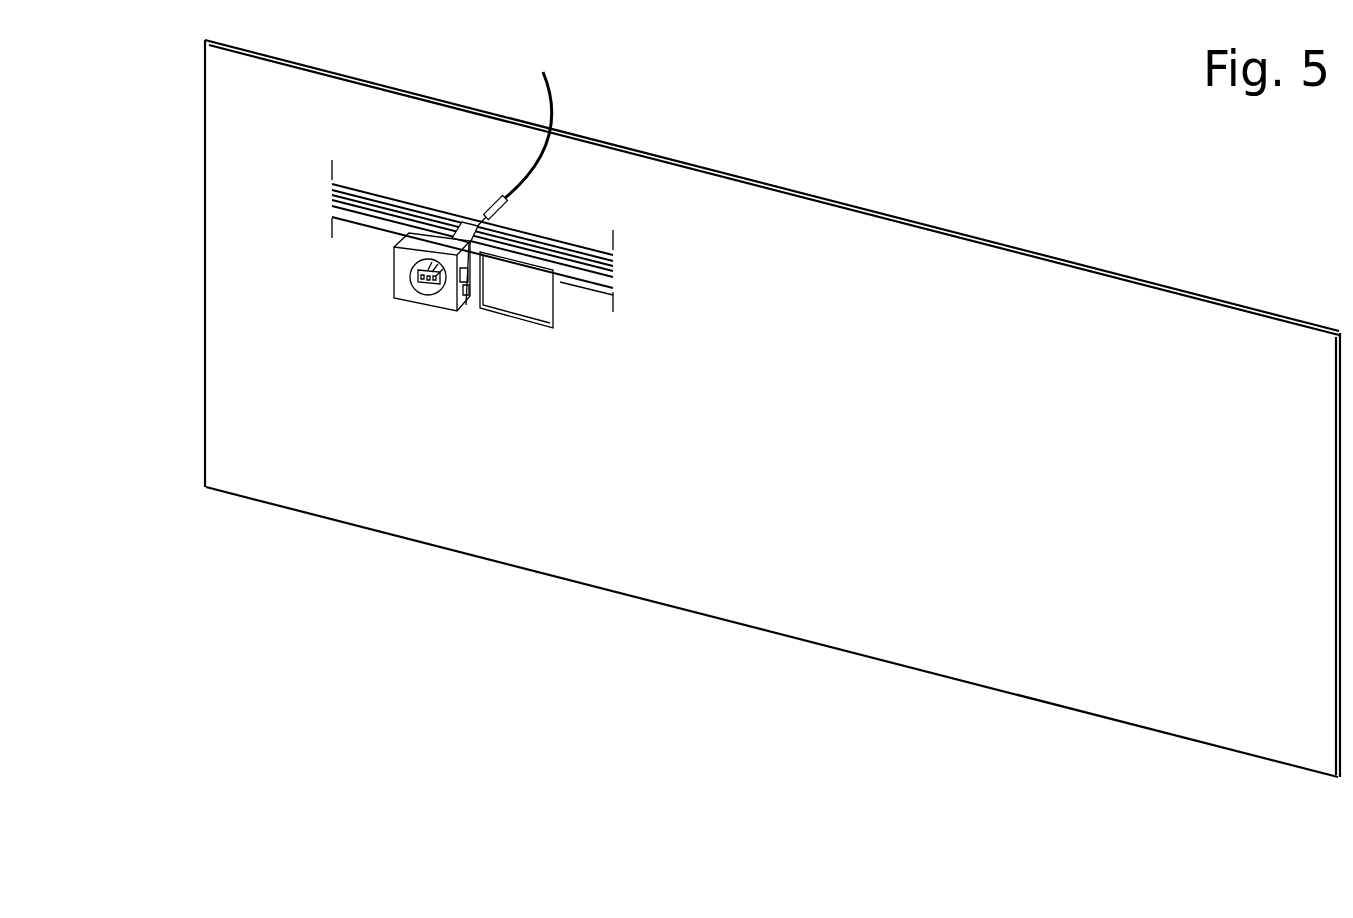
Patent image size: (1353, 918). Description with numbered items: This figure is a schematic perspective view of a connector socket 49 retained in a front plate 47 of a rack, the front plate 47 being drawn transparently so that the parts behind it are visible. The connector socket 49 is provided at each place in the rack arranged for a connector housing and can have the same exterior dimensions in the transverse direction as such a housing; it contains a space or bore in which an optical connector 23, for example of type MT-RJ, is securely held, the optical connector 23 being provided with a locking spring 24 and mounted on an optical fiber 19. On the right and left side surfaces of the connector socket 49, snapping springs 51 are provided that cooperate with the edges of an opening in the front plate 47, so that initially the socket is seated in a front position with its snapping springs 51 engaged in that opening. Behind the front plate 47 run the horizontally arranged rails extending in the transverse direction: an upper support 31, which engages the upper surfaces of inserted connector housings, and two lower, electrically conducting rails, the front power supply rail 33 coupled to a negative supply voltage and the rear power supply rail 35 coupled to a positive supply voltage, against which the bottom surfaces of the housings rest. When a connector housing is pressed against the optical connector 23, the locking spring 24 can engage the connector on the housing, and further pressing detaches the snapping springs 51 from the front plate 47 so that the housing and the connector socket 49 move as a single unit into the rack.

The front plate 47 is at (425, 103).
The optical fiber 19 is at (532, 158).
The upper support 31 is at (569, 246).
The front power supply rail 33 is at (568, 282).
The rear power supply rail 35 is at (598, 286).
The locking spring 24 is at (409, 270).
The connector socket 49 is at (396, 290).
The optical connector 23 is at (422, 286).
The snapping springs 51 is at (468, 298).